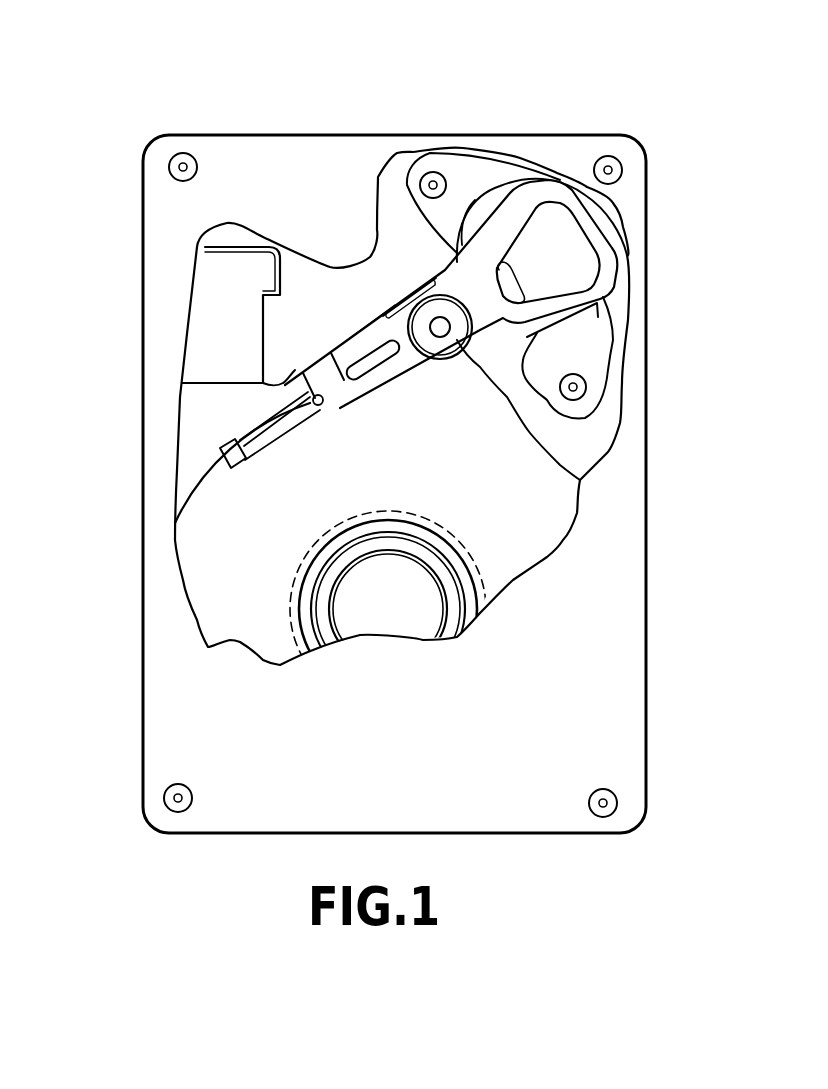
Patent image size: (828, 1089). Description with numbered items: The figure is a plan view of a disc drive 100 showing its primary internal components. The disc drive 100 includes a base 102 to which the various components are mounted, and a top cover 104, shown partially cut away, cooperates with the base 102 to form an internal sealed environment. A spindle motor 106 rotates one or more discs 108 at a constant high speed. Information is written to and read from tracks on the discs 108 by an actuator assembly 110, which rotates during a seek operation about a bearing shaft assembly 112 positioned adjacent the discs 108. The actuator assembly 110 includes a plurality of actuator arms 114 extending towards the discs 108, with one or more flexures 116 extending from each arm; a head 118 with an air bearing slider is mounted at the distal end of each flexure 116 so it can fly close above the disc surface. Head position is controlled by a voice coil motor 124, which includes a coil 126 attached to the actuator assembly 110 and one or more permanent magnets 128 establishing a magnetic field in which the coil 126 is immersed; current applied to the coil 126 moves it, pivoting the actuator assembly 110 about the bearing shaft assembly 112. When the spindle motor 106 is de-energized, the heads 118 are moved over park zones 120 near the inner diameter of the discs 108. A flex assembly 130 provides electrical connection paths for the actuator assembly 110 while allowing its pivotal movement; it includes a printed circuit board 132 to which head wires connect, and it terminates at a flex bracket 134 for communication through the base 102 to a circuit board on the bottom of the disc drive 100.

The disc drive 100 is at (183, 99).
The base 102 is at (203, 438).
The top cover 104 is at (183, 692).
The spindle motor 106 is at (388, 613).
The disc 108 is at (533, 540).
The actuator assembly 110 is at (415, 358).
The bearing shaft assembly 112 is at (443, 329).
The actuator arm 114 is at (387, 388).
The flexure 116 is at (270, 433).
The head 118 is at (222, 468).
The park zone 120 is at (292, 600).
The voice coil motor 124 is at (470, 146).
The coil 126 is at (600, 252).
The permanent magnet 128 is at (468, 212).
The flex assembly 130 is at (368, 323).
The printed circuit board 132 is at (407, 293).
The flex bracket 134 is at (217, 323).